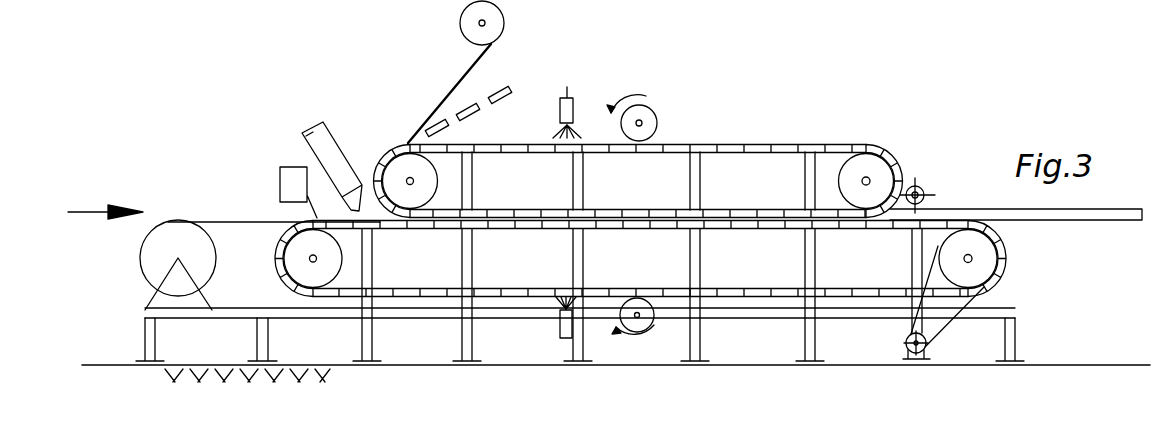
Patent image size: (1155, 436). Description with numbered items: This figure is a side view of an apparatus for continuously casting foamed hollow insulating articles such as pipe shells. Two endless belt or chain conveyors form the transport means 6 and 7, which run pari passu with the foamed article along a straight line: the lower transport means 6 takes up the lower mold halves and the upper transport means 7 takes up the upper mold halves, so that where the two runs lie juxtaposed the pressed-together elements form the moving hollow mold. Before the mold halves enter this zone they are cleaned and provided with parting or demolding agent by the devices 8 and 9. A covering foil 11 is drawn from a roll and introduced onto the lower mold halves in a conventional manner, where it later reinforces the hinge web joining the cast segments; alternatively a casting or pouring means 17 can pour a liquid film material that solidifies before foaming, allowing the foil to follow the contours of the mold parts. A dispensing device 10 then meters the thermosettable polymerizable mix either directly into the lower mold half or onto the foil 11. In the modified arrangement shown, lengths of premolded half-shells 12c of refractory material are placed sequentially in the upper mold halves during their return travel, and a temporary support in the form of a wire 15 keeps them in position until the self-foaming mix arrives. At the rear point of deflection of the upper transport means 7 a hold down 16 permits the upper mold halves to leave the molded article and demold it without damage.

The transport means 6 is at (1006, 262).
The transport means 7 is at (890, 152).
The cleaning device 8 is at (643, 328).
The cleaning device 9 is at (565, 342).
The dispensing device 10 is at (313, 137).
The covering foil 11 is at (223, 220).
The premolded half-shells 12c is at (513, 88).
The wire 15 is at (458, 72).
The hold down 16 is at (920, 186).
The casting or pouring means 17 is at (287, 192).